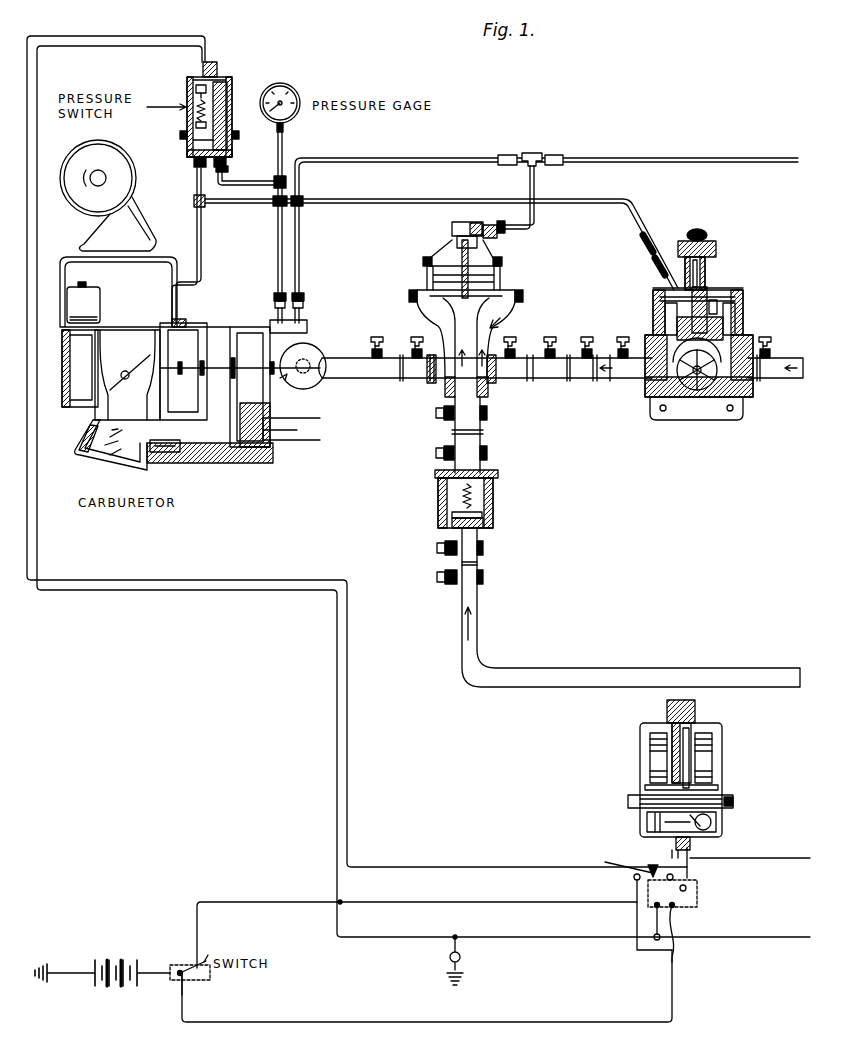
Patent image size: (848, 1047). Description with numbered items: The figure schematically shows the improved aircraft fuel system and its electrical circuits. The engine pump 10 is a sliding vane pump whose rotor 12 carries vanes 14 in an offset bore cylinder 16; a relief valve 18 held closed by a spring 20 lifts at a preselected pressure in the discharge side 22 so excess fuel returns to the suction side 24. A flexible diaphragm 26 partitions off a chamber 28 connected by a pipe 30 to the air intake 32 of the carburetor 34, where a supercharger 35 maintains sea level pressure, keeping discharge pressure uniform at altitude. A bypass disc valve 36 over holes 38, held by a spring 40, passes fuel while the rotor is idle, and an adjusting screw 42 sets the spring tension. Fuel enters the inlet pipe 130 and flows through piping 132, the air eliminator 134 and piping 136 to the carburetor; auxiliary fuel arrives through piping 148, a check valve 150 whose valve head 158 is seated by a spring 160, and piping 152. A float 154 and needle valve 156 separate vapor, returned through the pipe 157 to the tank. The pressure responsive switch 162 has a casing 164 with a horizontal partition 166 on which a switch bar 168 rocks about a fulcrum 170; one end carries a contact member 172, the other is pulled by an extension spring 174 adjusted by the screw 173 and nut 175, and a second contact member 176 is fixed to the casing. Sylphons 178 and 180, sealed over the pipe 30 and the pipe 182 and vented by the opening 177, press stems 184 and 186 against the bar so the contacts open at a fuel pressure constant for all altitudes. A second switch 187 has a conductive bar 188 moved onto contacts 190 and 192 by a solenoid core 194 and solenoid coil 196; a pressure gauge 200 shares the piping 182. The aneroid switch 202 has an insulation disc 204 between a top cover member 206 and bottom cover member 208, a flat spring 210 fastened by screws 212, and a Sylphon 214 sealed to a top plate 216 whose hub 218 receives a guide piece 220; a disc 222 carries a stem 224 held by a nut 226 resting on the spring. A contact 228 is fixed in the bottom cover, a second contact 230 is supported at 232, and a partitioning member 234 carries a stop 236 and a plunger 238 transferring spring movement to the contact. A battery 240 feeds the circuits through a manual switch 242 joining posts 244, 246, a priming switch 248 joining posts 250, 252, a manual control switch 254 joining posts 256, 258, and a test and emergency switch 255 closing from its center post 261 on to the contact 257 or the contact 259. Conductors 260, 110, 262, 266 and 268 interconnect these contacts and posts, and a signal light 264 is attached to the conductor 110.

The engine pump 10 is at (735, 312).
The rotor 12 is at (700, 358).
The vanes 14 is at (686, 394).
The offset bore cylinder 16 is at (743, 396).
The relief valve 18 is at (672, 305).
The spring 20 is at (657, 290).
The discharge side 22 is at (670, 323).
The suction side 24 is at (727, 322).
The flexible diaphragm 26 is at (653, 295).
The chamber 28 is at (713, 290).
The pipe 30 is at (253, 207).
The air intake 32 is at (152, 234).
The carburetor 34 is at (85, 410).
The supercharger 35 is at (78, 152).
The disc valve 36 is at (727, 307).
The holes 38 is at (716, 302).
The spring 40 is at (722, 318).
The adjusting screw 42 is at (698, 228).
The conductor 110 is at (116, 37).
The inlet pipe 130 is at (790, 376).
The piping 132 is at (616, 376).
The air eliminator 134 is at (509, 286).
The piping 136 is at (347, 363).
The piping 148 is at (766, 676).
The check valve 150 is at (499, 476).
The piping 152 is at (470, 443).
The float 154 is at (496, 272).
The needle valve 156 is at (486, 243).
The pipe 157 is at (580, 158).
The valve head 158 is at (493, 515).
The spring 160 is at (475, 498).
The pressure responsive switch 162 is at (190, 128).
The casing 164 is at (187, 82).
The horizontal partition 166 is at (188, 143).
The switch bar 168 is at (181, 134).
The fulcrum 170 is at (194, 173).
The contact member 172 is at (229, 118).
The screw 173 is at (188, 78).
The extension spring 174 is at (166, 99).
The nut 175 is at (200, 70).
The second contact member 176 is at (234, 143).
The opening 177 is at (215, 186).
The Sylphon 178 is at (190, 152).
The Sylphon 180 is at (232, 152).
The pipe 182 is at (236, 183).
The stem 184 is at (233, 97).
The stem 186 is at (194, 201).
The second switch 187 is at (230, 66).
The conductive bar 188 is at (233, 78).
The contact 190 is at (221, 50).
The contact 192 is at (209, 50).
The solenoid core 194 is at (240, 90).
The solenoid coil 196 is at (238, 82).
The pressure gauge 200 is at (284, 87).
The aneroid switch 202 is at (640, 751).
The insulation disc 204 is at (628, 802).
The top cover member 206 is at (639, 769).
The bottom cover member 208 is at (644, 836).
The flat spring 210 is at (733, 804).
The screws 212 is at (732, 792).
The Sylphon 214 is at (713, 751).
The top plate 216 is at (710, 738).
The hub 218 is at (700, 730).
The guide piece 220 is at (666, 758).
The disc 222 is at (729, 777).
The stem 224 is at (711, 758).
The nut 226 is at (645, 787).
The contact 228 is at (640, 824).
The second contact 230 is at (664, 842).
The insulated support 232 is at (718, 826).
The partitioning member 234 is at (713, 813).
The stop 236 is at (640, 815).
The plunger 238 is at (708, 842).
The battery 240 is at (96, 988).
The manual switch 242 is at (181, 963).
The post 244 is at (174, 980).
The post 246 is at (207, 976).
The priming switch 248 is at (677, 908).
The post 250 is at (650, 911).
The post 252 is at (676, 945).
The manual control switch 254 is at (674, 878).
The test and emergency switch 255 is at (612, 862).
The post 256 is at (646, 891).
The contact 257 is at (634, 877).
The post 258 is at (687, 889).
The contact 259 is at (690, 866).
The conductor 260 is at (477, 867).
The center post 261 is at (666, 860).
The conductor 262 is at (792, 856).
The signal light 264 is at (461, 958).
The conductor 266 is at (441, 1026).
The conductor 268 is at (484, 895).